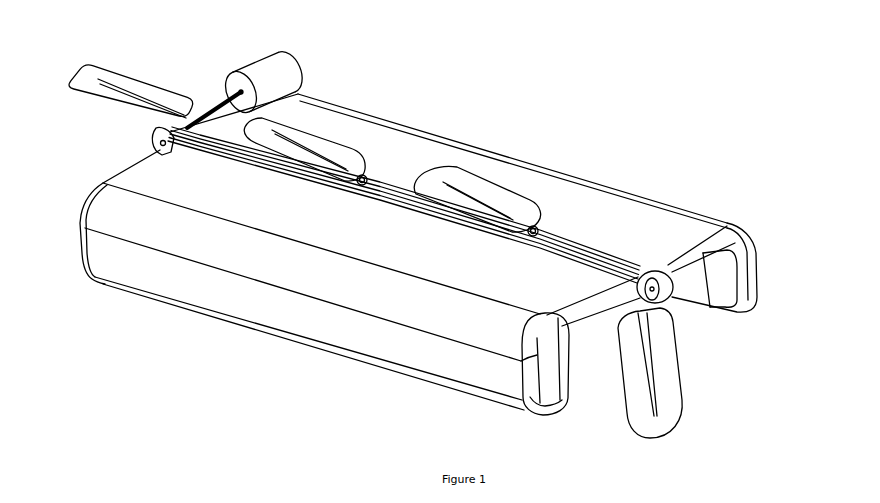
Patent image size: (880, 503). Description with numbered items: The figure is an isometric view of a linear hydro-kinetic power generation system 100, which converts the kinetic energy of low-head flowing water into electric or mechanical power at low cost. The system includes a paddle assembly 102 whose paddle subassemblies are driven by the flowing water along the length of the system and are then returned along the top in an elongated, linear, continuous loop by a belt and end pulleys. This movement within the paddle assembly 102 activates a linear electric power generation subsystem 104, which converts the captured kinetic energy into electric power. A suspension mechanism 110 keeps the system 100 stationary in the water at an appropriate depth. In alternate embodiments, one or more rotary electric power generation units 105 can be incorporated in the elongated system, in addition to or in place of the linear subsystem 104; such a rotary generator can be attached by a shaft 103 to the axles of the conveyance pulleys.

The linear hydro-kinetic power generation system 100 is at (644, 90).
The paddle assembly 102 is at (118, 128).
The shaft 103 is at (210, 102).
The linear electric power generation subsystem 104 is at (675, 311).
The rotary electric power generation unit 105 is at (308, 60).
The suspension mechanism 110 is at (463, 130).